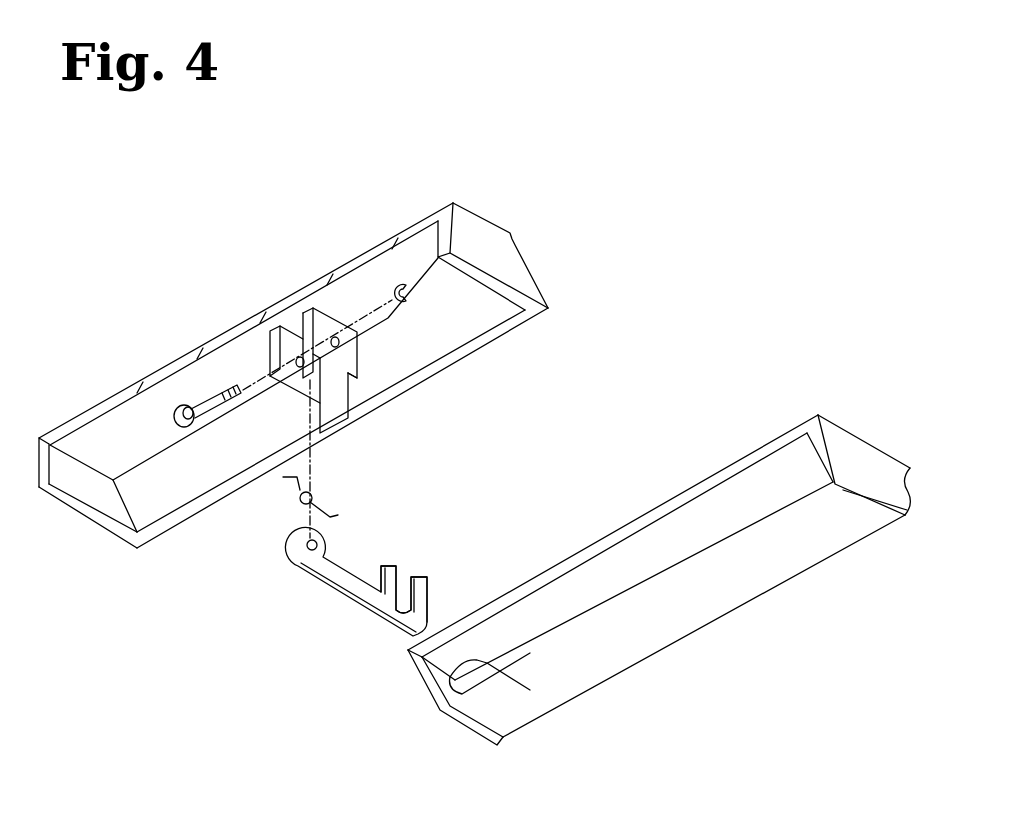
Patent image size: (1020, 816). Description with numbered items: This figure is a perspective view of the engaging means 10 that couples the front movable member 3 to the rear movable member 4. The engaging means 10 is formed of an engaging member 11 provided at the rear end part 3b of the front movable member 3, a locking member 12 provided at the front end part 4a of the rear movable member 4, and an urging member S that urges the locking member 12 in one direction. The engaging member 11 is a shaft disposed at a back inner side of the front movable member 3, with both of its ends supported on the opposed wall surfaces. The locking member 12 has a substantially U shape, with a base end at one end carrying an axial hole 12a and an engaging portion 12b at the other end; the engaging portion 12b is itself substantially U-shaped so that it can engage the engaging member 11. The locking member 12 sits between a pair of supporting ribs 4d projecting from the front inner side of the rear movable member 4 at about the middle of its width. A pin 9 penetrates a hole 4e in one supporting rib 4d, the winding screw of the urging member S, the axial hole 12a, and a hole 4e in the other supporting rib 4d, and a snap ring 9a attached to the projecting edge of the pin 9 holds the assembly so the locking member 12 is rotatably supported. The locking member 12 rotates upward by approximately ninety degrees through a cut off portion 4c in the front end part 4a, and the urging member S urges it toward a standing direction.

The front movable member 3 is at (831, 412).
The rear end part 3b is at (735, 467).
The rear movable member 4 is at (502, 221).
The front end part 4a is at (533, 268).
The cut off portion 4c is at (351, 418).
The supporting ribs 4d is at (312, 306).
The hole 4e is at (345, 343).
The pin 9 is at (195, 402).
The snap ring 9a is at (388, 292).
The engaging means 10 is at (252, 636).
The engaging member 11 is at (575, 664).
The locking member 12 is at (360, 611).
The axial hole 12a is at (322, 542).
The engaging portion 12b is at (412, 575).
The urging member S is at (285, 478).